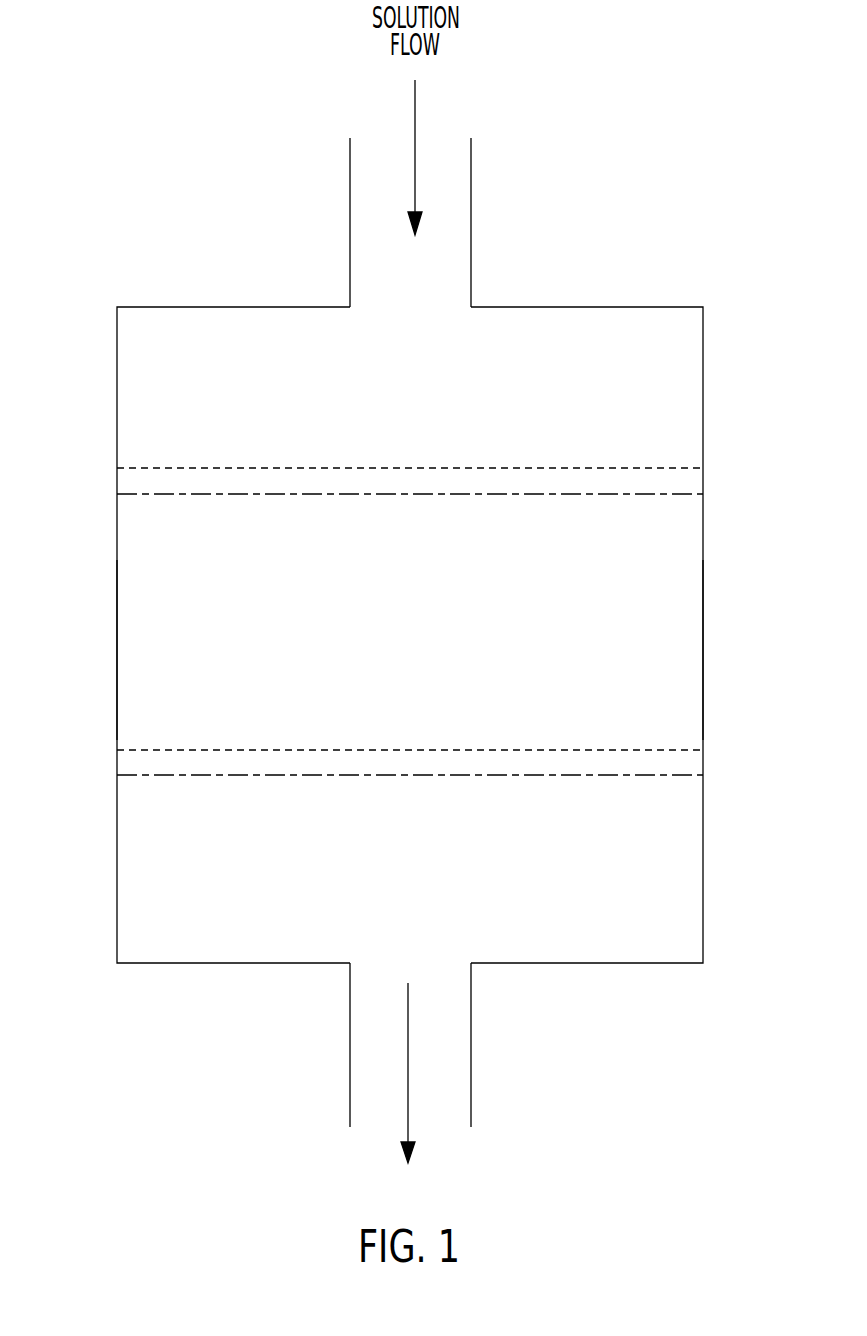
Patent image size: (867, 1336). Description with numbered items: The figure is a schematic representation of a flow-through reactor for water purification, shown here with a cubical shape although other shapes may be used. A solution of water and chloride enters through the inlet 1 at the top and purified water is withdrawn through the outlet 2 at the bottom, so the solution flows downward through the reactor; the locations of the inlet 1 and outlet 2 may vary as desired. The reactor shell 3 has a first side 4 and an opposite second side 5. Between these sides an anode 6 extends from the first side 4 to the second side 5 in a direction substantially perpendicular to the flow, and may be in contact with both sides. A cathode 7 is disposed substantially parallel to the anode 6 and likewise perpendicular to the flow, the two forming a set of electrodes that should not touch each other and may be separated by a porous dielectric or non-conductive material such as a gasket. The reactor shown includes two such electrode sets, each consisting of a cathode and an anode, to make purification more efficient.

The inlet 1 is at (350, 165).
The outlet 2 is at (350, 1075).
The reactor shell 3 is at (579, 307).
The first side 4 is at (117, 648).
The second side 5 is at (703, 640).
The anode 6 is at (580, 494).
The cathode 7 is at (570, 468).